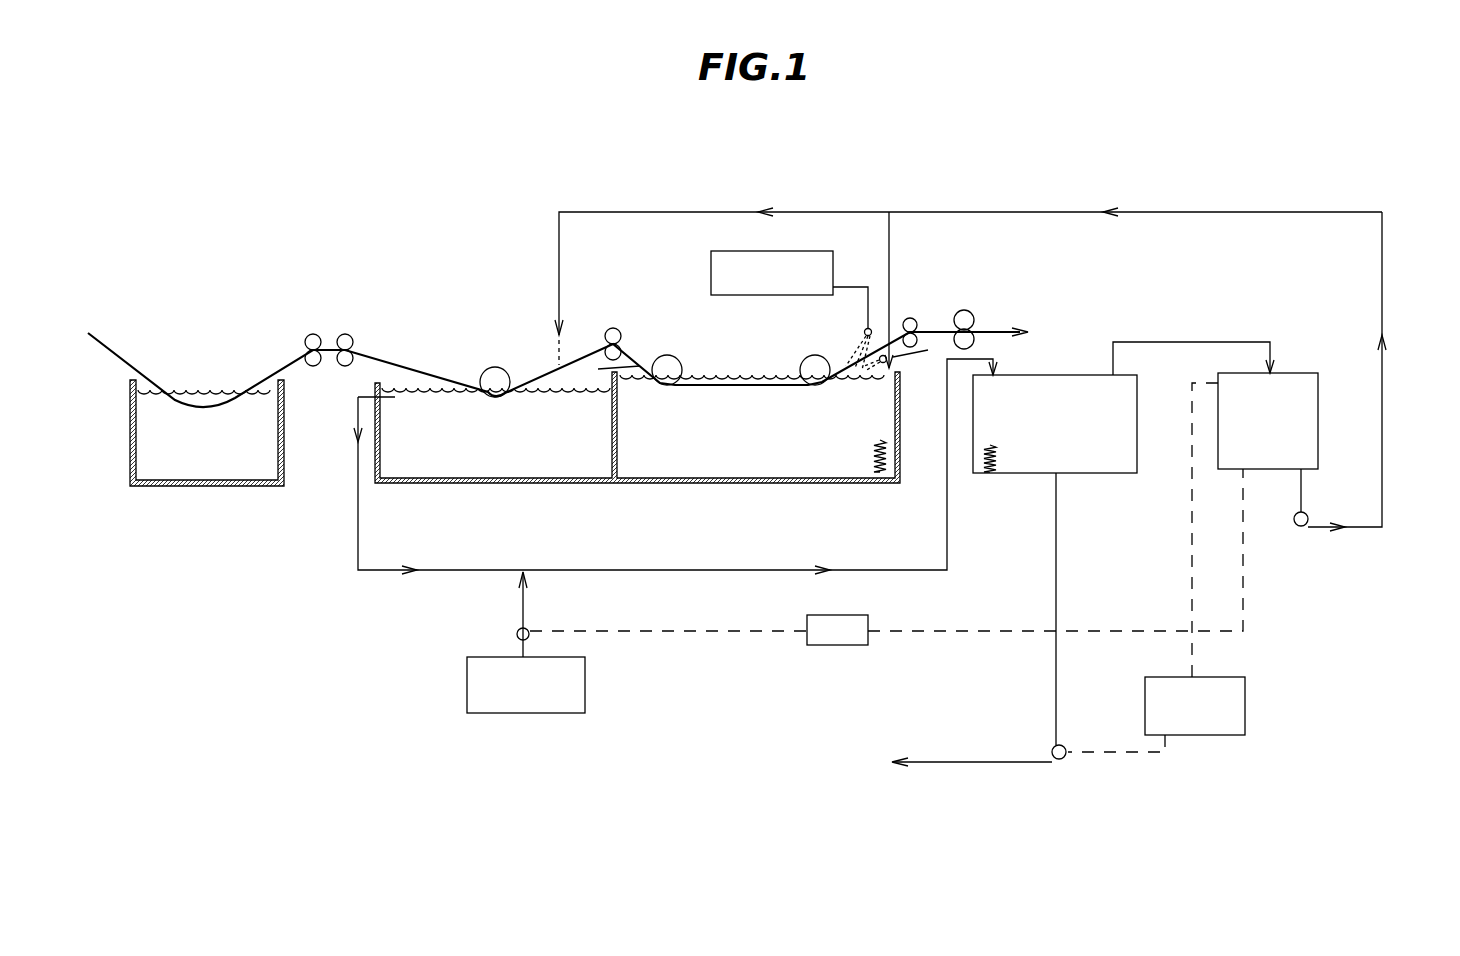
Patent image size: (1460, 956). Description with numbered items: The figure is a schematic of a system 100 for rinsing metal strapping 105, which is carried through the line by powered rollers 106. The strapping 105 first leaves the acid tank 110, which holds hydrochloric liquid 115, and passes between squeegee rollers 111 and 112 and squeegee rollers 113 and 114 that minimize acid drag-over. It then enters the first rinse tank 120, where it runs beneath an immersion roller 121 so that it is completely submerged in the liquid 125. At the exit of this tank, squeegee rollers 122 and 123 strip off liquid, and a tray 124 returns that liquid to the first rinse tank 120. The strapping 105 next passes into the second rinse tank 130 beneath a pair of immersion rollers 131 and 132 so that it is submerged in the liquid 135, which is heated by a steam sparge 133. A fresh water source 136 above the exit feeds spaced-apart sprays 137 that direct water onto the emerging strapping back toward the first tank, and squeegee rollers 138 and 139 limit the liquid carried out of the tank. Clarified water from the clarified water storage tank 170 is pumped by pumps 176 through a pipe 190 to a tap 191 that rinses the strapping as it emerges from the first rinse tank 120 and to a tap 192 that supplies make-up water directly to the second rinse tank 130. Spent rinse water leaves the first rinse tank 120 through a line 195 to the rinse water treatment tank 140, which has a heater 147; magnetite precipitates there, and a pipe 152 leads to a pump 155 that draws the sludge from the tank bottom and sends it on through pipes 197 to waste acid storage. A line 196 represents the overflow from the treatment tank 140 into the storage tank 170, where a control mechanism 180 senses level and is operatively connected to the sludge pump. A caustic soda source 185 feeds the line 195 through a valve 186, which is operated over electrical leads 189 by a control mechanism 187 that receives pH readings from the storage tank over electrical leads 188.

The system 100 is at (311, 225).
The metal strapping 105 is at (110, 345).
The powered rollers 106 is at (978, 308).
The acid tank 110 is at (250, 480).
The squeegee roller 111 is at (310, 333).
The squeegee roller 112 is at (312, 367).
The squeegee roller 113 is at (350, 334).
The squeegee roller 114 is at (344, 367).
The hydrochloric liquid 115 is at (188, 440).
The first rinse tank 120 is at (558, 483).
The immersion roller 121 is at (490, 368).
The squeegee roller 122 is at (610, 328).
The squeegee roller 123 is at (623, 346).
The tray 124 is at (622, 370).
The liquid 125 is at (467, 431).
The second rinse tank 130 is at (670, 480).
The immersion roller 131 is at (680, 358).
The immersion roller 132 is at (808, 356).
The steam sparge 133 is at (873, 474).
The liquid 135 is at (728, 431).
The fresh water source 136 is at (800, 251).
The sprays 137 is at (860, 325).
The squeegee roller 138 is at (913, 318).
The squeegee roller 139 is at (918, 352).
The rinse water treatment tank 140 is at (1048, 372).
The heater 147 is at (1000, 467).
The pipe 152 is at (1058, 572).
The pump 155 is at (1072, 763).
The clarified water storage tank 170 is at (1295, 372).
The pumps 176 is at (1297, 528).
The control mechanism 180 is at (1248, 710).
The caustic soda source 185 is at (525, 715).
The valve 186 is at (516, 633).
The control mechanism 187 is at (822, 646).
The electrical leads 188 is at (942, 633).
The electrical leads 189 is at (672, 633).
The pipe 190 is at (1385, 399).
The tap 191 is at (555, 300).
The tap 192 is at (892, 258).
The line 195 is at (700, 570).
The line 196 is at (1170, 342).
The pipes 197 is at (930, 765).